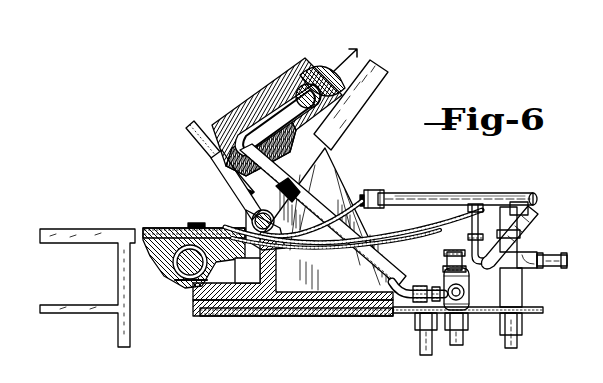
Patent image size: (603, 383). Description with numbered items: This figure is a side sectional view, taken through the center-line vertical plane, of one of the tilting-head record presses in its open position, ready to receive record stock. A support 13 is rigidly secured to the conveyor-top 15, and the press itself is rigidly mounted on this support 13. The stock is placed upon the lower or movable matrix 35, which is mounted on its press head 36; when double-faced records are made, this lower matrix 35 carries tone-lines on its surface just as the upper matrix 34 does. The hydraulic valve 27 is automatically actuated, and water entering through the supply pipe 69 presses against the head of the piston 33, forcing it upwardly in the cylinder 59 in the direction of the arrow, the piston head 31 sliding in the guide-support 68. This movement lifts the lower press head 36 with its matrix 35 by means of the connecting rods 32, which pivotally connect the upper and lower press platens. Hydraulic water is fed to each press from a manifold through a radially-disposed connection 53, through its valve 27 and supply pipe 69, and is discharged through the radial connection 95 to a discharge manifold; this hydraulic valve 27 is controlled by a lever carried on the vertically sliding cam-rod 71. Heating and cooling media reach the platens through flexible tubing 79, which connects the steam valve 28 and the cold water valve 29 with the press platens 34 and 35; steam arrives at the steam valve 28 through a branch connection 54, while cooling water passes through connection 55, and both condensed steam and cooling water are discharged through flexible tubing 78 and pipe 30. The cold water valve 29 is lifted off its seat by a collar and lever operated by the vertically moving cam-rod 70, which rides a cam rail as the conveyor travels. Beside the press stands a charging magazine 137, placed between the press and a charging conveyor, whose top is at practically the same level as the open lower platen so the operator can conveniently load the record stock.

The support 13 is at (294, 224).
The conveyor-top 15 is at (308, 316).
The hydraulic valve 27 is at (464, 282).
The steam valve 28 is at (480, 242).
The cold water valve 29 is at (540, 250).
The pipe 30 is at (430, 194).
The piston head 31 is at (315, 70).
The connecting rods 32 is at (222, 213).
The piston 33 is at (280, 88).
The upper matrix 34 is at (200, 140).
The lower matrix 35 is at (152, 229).
The press head 36 is at (177, 279).
The radially-disposed connection 53 is at (447, 259).
The branch connection 54 is at (536, 228).
The connection 55 is at (556, 268).
The cylinder 59 is at (250, 100).
The guide-support 68 is at (352, 112).
The supply pipe 69 is at (380, 272).
The cam-rod 70 is at (519, 341).
The cam-rod 71 is at (420, 345).
The flexible tubing 78 is at (366, 196).
The flexible tubing 79 is at (422, 228).
The radial connection 95 is at (464, 333).
The charging magazine 137 is at (62, 240).